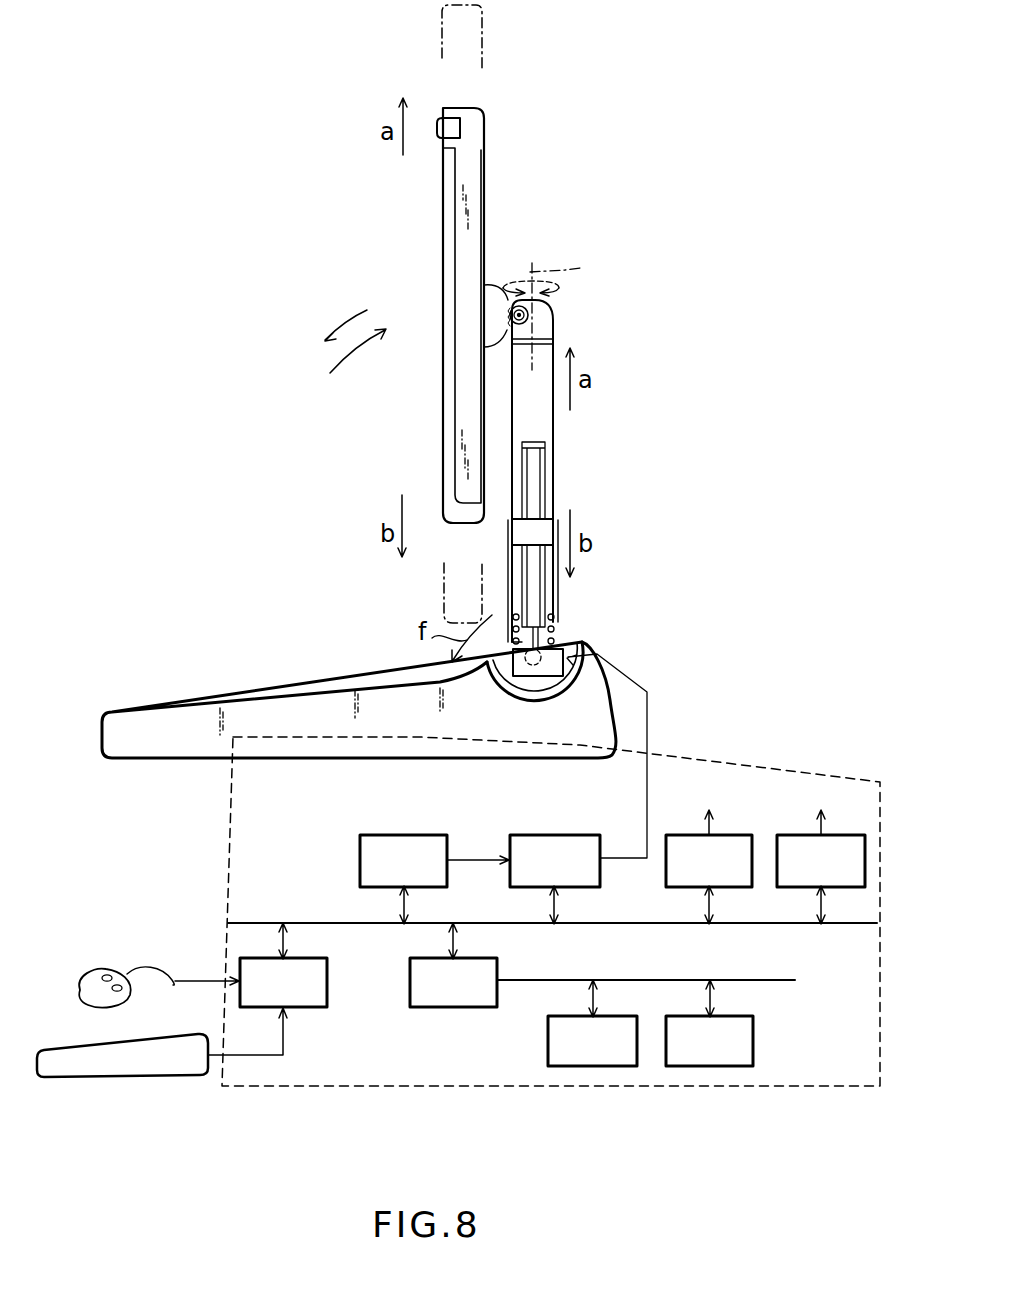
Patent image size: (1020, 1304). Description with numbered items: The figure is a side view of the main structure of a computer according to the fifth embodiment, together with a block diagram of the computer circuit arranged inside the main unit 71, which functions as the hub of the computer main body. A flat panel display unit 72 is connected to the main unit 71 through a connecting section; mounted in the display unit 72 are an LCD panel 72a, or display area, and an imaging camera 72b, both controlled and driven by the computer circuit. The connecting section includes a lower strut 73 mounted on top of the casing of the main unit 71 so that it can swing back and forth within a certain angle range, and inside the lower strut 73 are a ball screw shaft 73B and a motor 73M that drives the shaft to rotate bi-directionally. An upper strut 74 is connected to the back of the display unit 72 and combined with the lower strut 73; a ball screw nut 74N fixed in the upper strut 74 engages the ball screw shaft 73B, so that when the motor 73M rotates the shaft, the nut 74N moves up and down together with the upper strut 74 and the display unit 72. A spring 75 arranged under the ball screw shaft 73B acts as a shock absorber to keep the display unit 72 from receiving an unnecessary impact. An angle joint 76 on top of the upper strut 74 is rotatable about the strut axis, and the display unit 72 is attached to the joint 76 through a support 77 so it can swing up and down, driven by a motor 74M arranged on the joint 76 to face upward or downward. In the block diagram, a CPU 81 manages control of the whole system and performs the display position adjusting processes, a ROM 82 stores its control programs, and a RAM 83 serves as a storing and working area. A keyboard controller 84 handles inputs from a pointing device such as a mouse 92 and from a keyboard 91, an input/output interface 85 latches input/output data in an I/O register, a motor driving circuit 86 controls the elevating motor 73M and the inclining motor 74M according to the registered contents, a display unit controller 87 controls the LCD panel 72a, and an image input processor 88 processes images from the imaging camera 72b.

The main unit 71 is at (167, 707).
The flat panel display unit 72 is at (484, 150).
The LCD panel 72a is at (443, 230).
The imaging camera 72b is at (437, 122).
The lower strut 73 is at (558, 610).
The ball screw shaft 73B is at (545, 592).
The motor 73M is at (565, 650).
The upper strut 74 is at (558, 352).
The motor 74M is at (522, 288).
The ball screw nut 74N is at (545, 528).
The spring 75 is at (560, 630).
The angle joint 76 is at (545, 312).
The support 77 is at (500, 290).
The CPU 81 is at (472, 1008).
The ROM 82 is at (617, 1067).
The RAM 83 is at (730, 1067).
The keyboard controller 84 is at (305, 1008).
The input/output interface 85 is at (398, 835).
The motor driving circuit 86 is at (548, 835).
The display unit controller 87 is at (797, 889).
The image input processor 88 is at (690, 889).
The keyboard 91 is at (160, 1077).
The mouse 92 is at (95, 972).